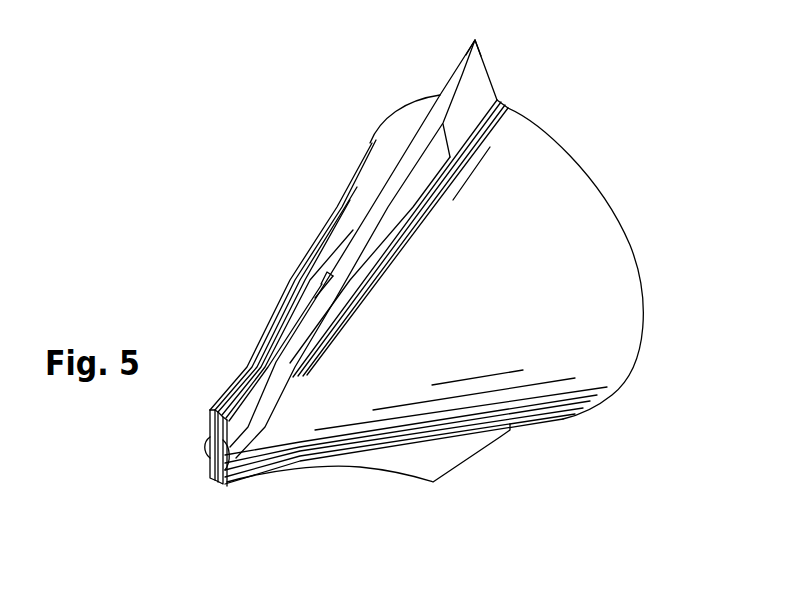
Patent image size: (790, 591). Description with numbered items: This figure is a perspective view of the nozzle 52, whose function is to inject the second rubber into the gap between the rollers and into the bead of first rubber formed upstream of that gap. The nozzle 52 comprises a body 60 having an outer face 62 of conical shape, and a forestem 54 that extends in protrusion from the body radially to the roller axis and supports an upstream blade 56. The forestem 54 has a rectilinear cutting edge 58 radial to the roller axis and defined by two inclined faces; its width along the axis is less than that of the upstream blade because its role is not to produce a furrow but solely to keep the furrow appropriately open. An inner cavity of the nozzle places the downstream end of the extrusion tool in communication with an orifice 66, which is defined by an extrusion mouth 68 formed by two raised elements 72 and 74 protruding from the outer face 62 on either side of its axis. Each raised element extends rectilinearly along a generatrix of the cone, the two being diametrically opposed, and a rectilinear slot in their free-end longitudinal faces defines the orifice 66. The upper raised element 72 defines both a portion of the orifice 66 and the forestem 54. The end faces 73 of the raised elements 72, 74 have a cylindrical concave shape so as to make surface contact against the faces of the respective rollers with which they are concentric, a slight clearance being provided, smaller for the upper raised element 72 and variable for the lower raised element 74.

The nozzle 52 is at (612, 146).
The forestem 54 is at (436, 158).
The upstream blade 56 is at (482, 81).
The rectilinear cutting edge 58 is at (490, 42).
The body 60 is at (595, 277).
The outer face 62 is at (567, 216).
The orifice 66 is at (208, 457).
The extrusion mouth 68 is at (280, 320).
The upper raised element 72 is at (353, 231).
The end faces 73 is at (386, 184).
The lower raised element 74 is at (290, 474).